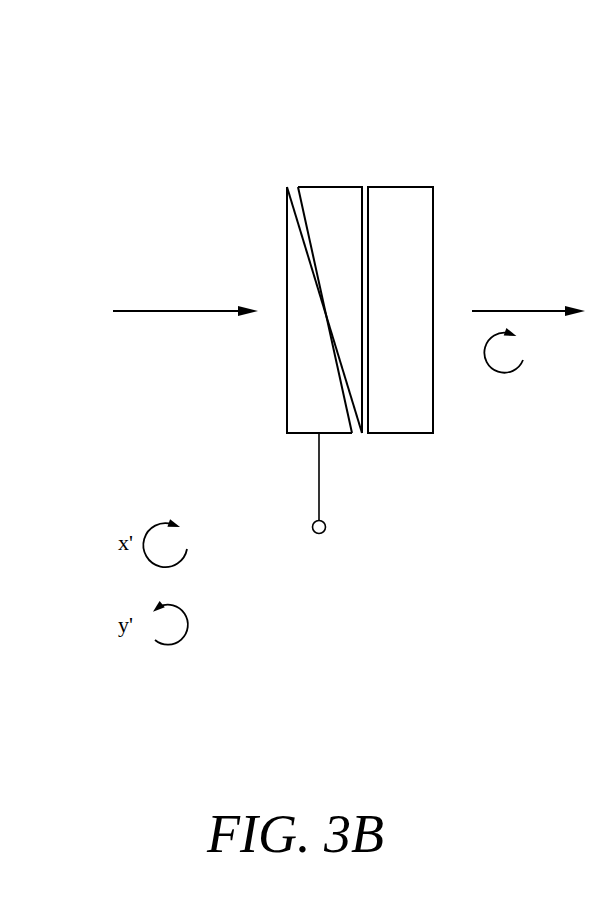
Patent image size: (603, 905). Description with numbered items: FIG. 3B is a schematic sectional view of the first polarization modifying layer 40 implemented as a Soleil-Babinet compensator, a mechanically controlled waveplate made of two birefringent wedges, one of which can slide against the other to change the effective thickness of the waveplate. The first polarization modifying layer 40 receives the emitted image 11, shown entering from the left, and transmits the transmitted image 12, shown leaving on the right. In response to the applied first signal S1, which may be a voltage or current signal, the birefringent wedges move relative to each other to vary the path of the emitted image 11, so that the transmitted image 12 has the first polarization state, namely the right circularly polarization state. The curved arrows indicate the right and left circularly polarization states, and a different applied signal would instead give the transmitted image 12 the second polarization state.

The first polarization modifying layer 40 is at (236, 128).
The emitted image 11 is at (185, 311).
The transmitted image 12 is at (528, 311).
The first signal S1 is at (319, 500).